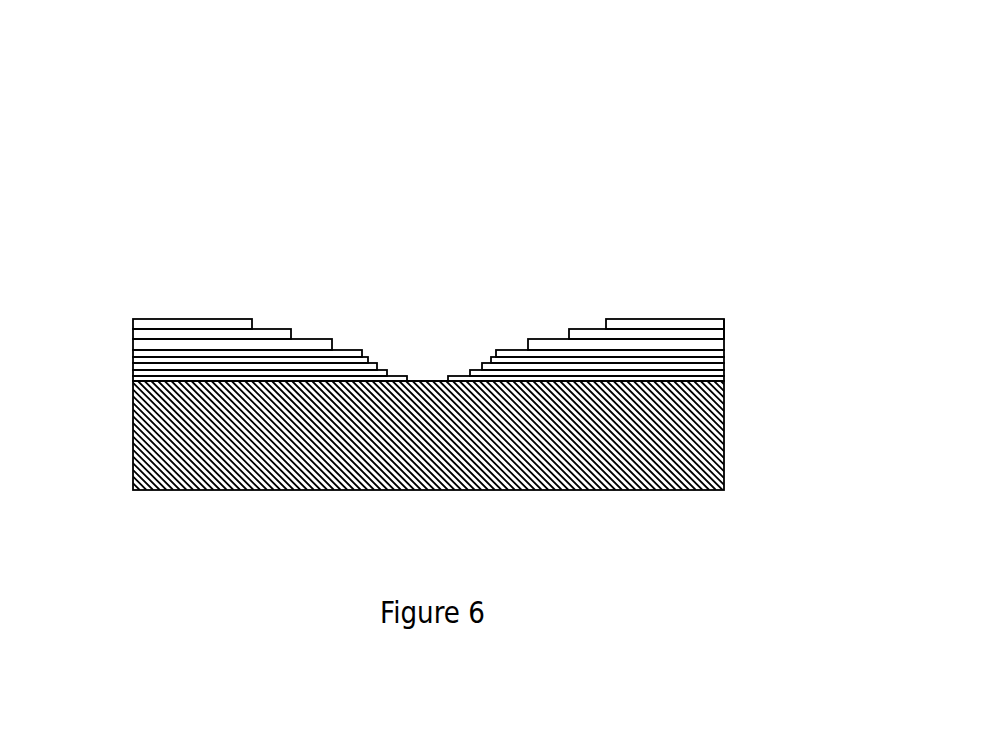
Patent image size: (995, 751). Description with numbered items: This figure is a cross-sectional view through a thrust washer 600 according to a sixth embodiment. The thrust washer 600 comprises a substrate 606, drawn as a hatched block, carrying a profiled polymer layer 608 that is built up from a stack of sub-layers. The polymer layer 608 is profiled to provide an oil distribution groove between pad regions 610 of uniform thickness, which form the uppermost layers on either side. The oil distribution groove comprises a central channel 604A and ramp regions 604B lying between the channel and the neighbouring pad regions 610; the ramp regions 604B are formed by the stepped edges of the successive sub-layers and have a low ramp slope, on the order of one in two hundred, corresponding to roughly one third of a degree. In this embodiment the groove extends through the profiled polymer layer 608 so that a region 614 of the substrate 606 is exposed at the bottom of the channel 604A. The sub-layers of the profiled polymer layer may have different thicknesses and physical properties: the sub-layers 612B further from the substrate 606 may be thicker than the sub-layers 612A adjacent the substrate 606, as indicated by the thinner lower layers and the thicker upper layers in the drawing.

The thrust washer 600 is at (250, 89).
The channel 604A is at (426, 359).
The ramp regions 604B is at (278, 308).
The substrate 606 is at (165, 427).
The profiled polymer layer 608 is at (123, 330).
The pad regions 610 is at (207, 309).
The sub-layers adjacent the substrate 612A is at (725, 370).
The sub-layers further from the substrate 612B is at (725, 340).
The exposed region of the substrate 614 is at (420, 380).